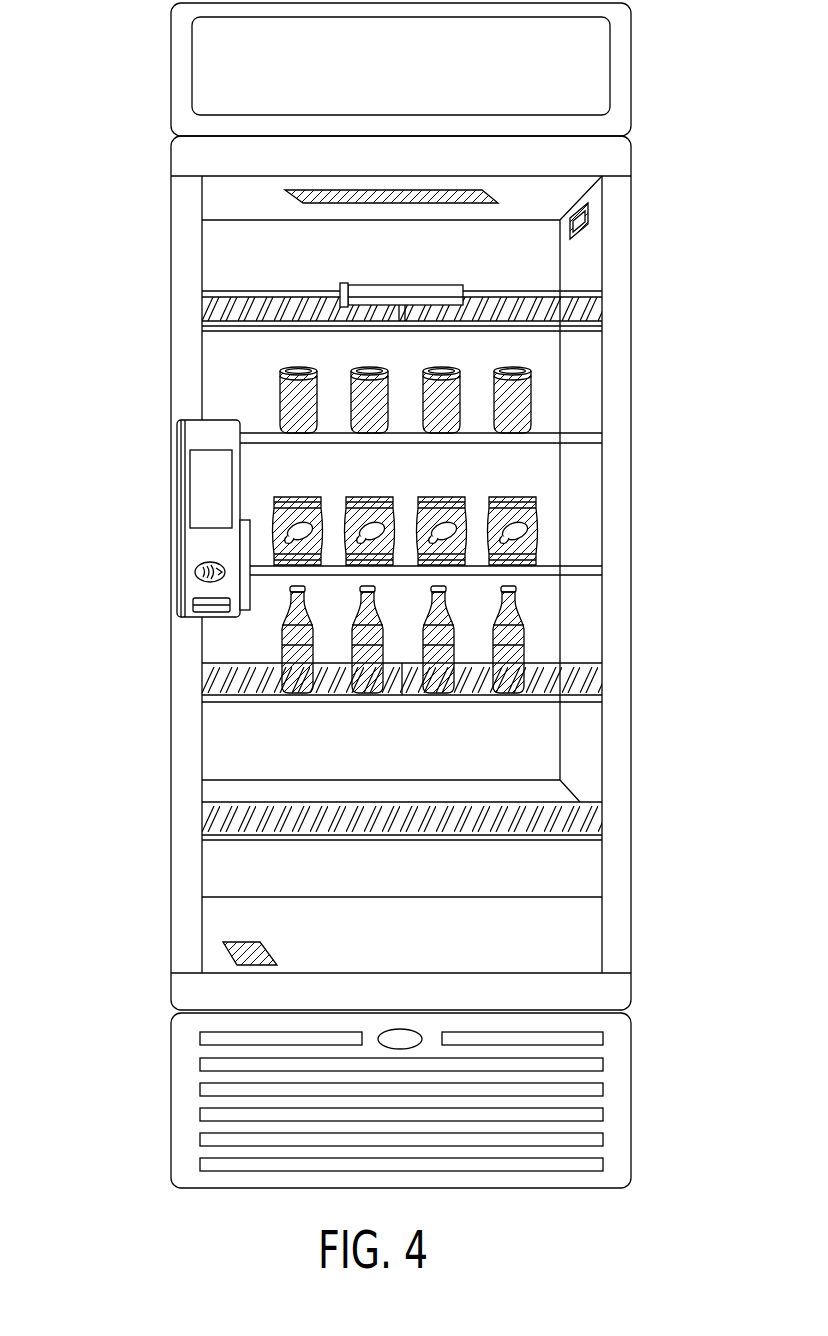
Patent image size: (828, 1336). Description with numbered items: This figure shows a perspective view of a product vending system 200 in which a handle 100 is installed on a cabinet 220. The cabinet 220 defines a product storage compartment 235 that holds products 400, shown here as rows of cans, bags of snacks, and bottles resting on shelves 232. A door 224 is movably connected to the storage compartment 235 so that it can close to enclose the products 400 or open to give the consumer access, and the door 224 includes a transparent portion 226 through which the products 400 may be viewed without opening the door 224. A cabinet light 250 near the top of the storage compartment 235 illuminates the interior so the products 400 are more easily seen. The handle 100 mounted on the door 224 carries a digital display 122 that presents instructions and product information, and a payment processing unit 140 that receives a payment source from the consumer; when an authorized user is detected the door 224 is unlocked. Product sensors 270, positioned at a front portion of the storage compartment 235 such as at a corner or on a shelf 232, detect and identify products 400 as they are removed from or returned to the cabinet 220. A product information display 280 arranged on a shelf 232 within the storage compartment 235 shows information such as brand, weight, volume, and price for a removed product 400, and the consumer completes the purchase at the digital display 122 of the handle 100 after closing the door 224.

The handle 100 is at (159, 520).
The digital display 122 is at (198, 490).
The payment processing unit 140 is at (195, 580).
The product vending system 200 is at (116, 306).
The cabinet 220 is at (618, 80).
The door 224 is at (190, 790).
The transparent portion 226 is at (580, 935).
The shelf 232 is at (510, 822).
The product storage compartment 235 is at (550, 480).
The cabinet light 250 is at (292, 198).
The product sensor 270 is at (590, 215).
The product information display 280 is at (400, 300).
The products 400 is at (510, 400).